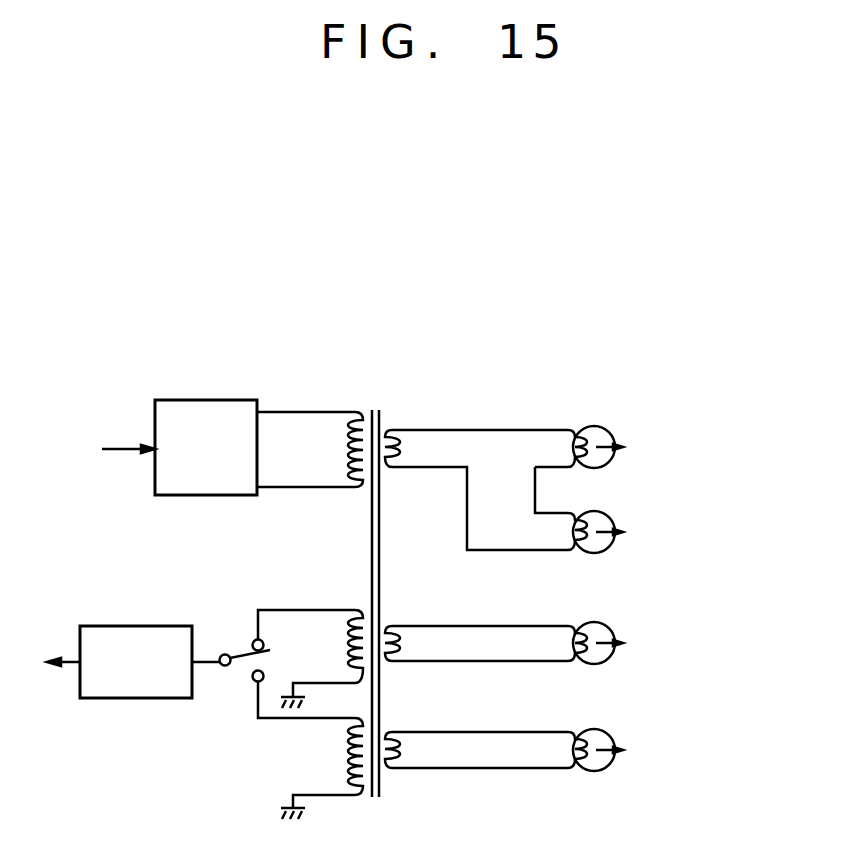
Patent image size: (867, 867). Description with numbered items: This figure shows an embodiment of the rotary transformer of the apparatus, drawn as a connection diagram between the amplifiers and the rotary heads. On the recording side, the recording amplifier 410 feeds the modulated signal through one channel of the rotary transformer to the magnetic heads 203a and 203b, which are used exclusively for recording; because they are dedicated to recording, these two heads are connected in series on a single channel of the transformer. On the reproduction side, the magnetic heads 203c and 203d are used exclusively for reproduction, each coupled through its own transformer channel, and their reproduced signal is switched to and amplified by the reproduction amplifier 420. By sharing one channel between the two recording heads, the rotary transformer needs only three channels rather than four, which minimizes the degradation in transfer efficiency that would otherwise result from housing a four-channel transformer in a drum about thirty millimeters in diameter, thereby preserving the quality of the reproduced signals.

The recording amplifier 410 is at (203, 400).
The reproduction amplifier 420 is at (118, 626).
The magnetic head 203a is at (603, 423).
The magnetic head 203b is at (607, 518).
The magnetic head 203c is at (603, 620).
The magnetic head 203d is at (604, 728).